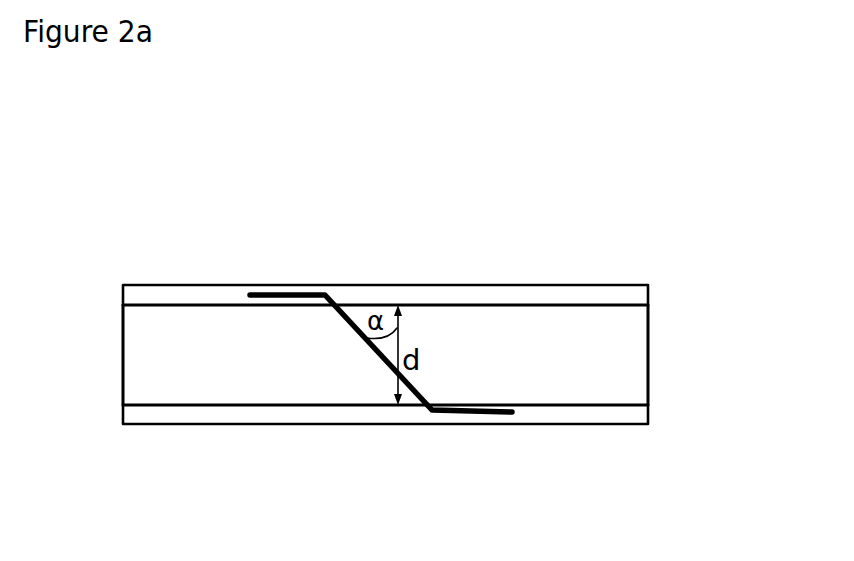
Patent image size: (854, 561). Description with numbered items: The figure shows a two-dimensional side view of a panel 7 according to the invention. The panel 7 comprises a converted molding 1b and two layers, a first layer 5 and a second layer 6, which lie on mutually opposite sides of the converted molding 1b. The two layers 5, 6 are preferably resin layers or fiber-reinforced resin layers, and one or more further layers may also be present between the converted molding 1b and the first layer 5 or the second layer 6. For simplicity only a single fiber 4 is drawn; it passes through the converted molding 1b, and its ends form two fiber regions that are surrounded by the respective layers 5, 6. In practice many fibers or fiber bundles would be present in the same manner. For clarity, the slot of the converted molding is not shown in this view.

The panel 7 is at (264, 240).
The second layer 6 is at (633, 300).
The first layer 5 is at (620, 413).
The converted molding 1b is at (635, 364).
The fiber 4 is at (357, 337).